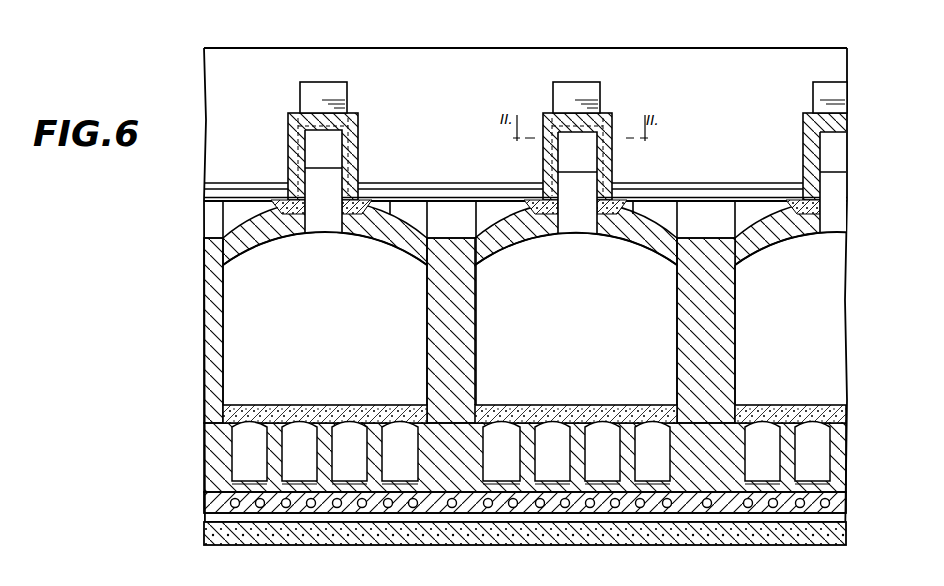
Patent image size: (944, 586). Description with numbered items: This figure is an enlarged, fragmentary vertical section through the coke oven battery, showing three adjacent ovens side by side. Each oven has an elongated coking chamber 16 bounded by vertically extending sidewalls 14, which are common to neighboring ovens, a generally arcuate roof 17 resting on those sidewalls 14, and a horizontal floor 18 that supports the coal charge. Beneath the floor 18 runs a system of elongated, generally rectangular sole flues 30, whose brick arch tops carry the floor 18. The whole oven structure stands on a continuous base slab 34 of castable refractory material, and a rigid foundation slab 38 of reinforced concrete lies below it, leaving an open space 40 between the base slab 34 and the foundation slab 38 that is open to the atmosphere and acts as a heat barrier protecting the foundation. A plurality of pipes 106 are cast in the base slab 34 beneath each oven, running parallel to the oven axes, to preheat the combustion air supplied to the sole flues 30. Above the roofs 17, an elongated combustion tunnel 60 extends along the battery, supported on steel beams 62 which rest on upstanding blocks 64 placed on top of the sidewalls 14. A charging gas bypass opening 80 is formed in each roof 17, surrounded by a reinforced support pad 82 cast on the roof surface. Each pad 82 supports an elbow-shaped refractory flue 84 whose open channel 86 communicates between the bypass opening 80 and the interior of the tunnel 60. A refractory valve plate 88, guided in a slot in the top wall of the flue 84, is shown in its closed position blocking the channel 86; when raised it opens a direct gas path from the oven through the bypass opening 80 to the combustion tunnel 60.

The sidewalls 14 is at (470, 340).
The coking chamber 16 is at (340, 347).
The roof 17 is at (503, 243).
The floor 18 is at (345, 405).
The sole flues 30 is at (308, 472).
The base slab 34 is at (527, 513).
The foundation slab 38 is at (713, 546).
The space 40 is at (657, 523).
The combustion tunnel 60 is at (573, 39).
The steel beams 62 is at (392, 236).
The blocks 64 is at (433, 230).
The charging gas bypass opening 80 is at (326, 218).
The support pad 82 is at (278, 196).
The elbow-shaped flue 84 is at (358, 122).
The open channel 86 is at (333, 151).
The valve plate 88 is at (347, 93).
The pipes 106 is at (362, 510).